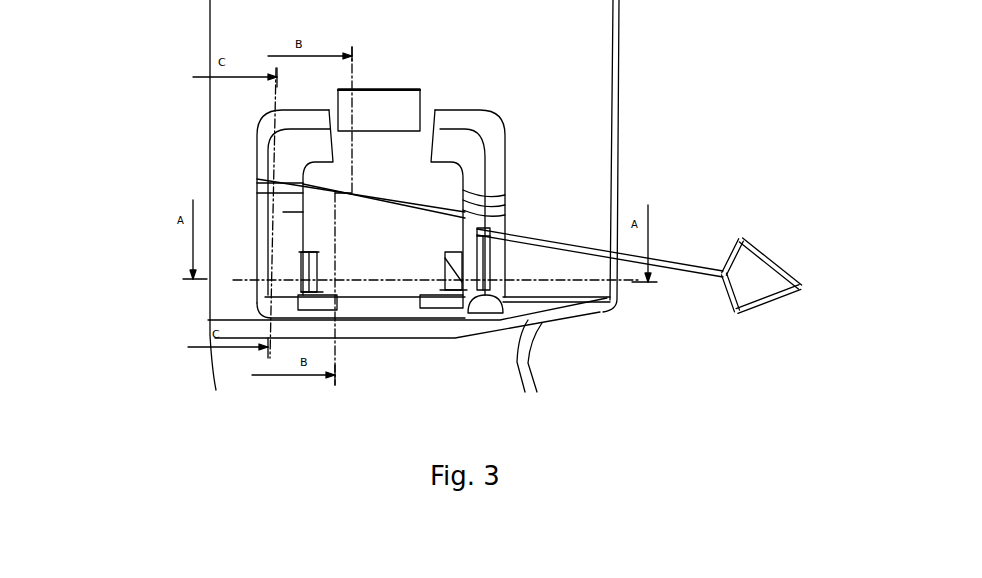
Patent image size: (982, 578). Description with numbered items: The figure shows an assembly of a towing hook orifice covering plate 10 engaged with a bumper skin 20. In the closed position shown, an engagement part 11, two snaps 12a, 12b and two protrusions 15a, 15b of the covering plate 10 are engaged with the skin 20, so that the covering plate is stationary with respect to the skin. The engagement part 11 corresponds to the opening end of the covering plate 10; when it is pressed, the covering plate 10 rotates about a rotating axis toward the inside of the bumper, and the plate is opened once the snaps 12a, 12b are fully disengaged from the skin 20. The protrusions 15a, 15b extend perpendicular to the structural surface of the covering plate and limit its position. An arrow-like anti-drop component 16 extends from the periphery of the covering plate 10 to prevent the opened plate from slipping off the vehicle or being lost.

The towing hook orifice covering plate 10 is at (322, 117).
The engagement part 11 is at (392, 110).
The skin 20 is at (276, 178).
The snap 12a is at (300, 250).
The snap 12b is at (505, 222).
The protrusion 15a is at (300, 303).
The protrusion 15b is at (500, 309).
The anti-drop component 16 is at (673, 268).